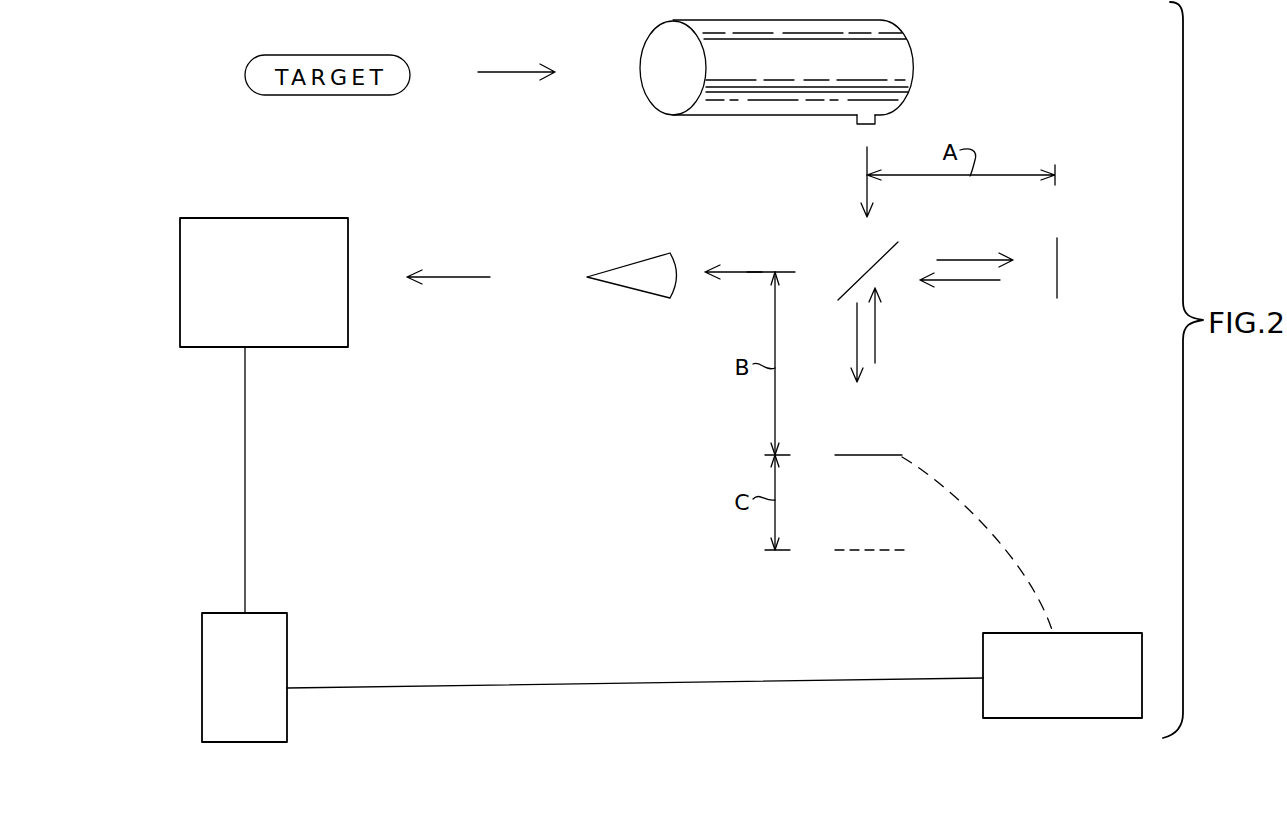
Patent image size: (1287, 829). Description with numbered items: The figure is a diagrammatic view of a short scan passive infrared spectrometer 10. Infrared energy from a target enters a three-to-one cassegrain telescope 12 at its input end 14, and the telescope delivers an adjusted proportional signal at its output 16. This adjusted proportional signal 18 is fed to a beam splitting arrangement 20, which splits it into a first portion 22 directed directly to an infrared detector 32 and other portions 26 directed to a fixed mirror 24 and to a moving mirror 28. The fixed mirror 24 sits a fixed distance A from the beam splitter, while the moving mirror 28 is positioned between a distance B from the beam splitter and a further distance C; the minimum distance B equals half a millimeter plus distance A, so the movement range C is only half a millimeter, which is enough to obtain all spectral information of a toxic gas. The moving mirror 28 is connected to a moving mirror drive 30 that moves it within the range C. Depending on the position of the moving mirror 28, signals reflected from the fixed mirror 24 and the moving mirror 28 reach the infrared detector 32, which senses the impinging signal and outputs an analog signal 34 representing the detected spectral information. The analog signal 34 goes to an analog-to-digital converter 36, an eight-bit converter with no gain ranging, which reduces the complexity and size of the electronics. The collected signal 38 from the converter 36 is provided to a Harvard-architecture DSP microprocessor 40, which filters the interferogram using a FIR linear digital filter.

The short scan passive infrared spectrometer 10 is at (1041, 104).
The cassegrain telescope 12 is at (878, 60).
The input end 14 is at (658, 68).
The output 16 is at (876, 116).
The adjusted proportional signal 18 is at (862, 162).
The beam splitting arrangement 20 is at (897, 243).
The first portion 22 is at (740, 272).
The fixed mirror 24 is at (1058, 276).
The other portions 26 is at (960, 288).
The moving mirror 28 is at (888, 455).
The moving mirror drive 30 is at (1112, 640).
The infrared detector 32 is at (603, 268).
The analog signal 34 is at (433, 277).
The analog-to-digital converter 36 is at (323, 347).
The collected signal 38 is at (247, 501).
The DSP microprocessor 40 is at (277, 630).